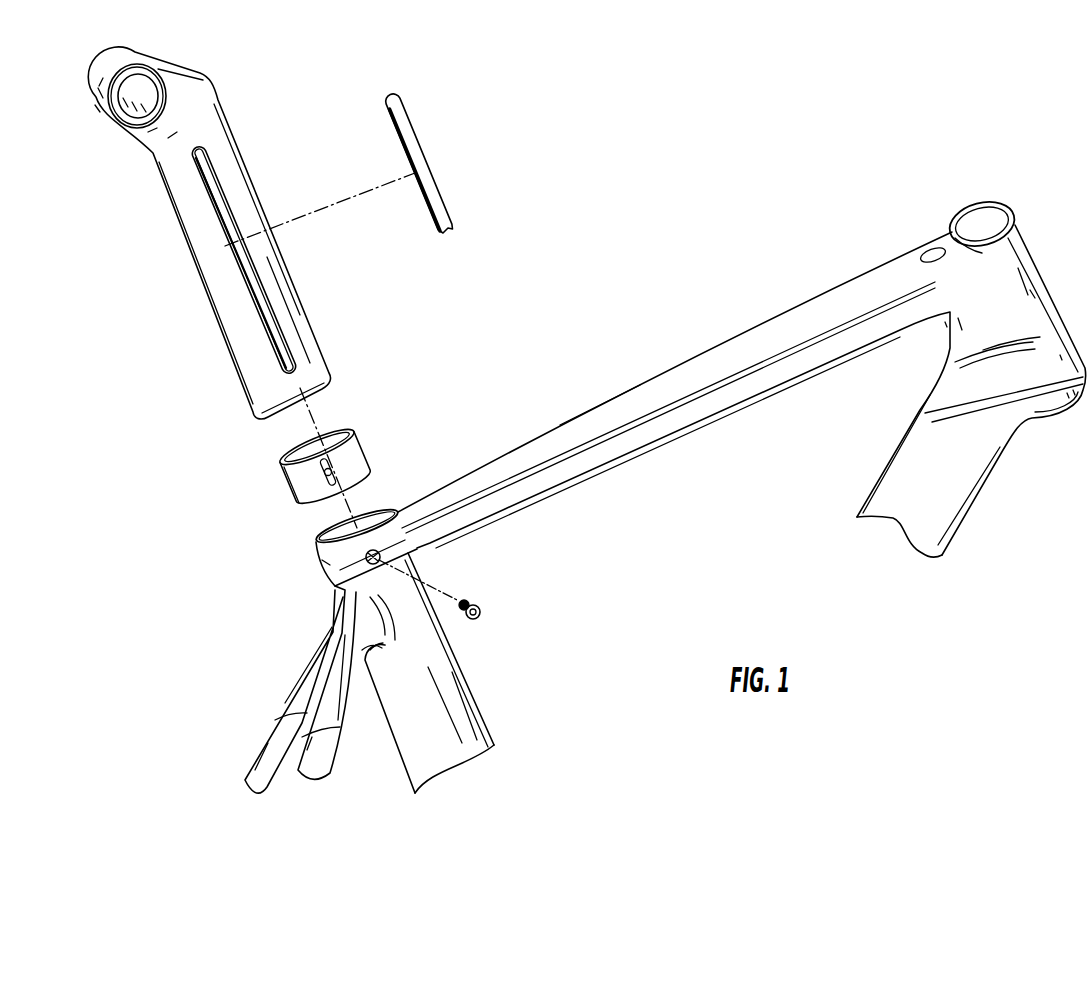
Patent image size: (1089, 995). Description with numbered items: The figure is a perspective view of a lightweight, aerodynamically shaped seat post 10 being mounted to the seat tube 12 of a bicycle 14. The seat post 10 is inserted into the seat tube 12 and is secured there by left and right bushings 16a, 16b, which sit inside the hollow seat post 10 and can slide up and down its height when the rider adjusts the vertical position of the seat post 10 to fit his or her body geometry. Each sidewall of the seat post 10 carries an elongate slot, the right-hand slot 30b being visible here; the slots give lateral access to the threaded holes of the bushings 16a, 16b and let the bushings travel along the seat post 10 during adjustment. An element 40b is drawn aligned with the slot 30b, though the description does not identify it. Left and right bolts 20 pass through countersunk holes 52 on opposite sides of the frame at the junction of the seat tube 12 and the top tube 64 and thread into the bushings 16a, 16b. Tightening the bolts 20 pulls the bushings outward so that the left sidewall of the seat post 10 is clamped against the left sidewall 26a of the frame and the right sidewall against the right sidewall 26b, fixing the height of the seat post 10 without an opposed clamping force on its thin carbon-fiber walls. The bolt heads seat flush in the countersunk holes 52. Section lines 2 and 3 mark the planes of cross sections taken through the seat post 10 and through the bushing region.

The bicycle 14 is at (56, 66).
The seat post 10 is at (233, 135).
The elongate slot 30b is at (223, 217).
The bolt 40b is at (413, 152).
The section line 2- 2 is at (300, 245).
The section line 3- 3 is at (245, 448).
The left bushing 16a is at (300, 421).
The right bushing 16b is at (306, 490).
The left sidewall of the bicycle frame 26a is at (317, 530).
The right sidewall of the bicycle frame 26b is at (340, 590).
The countersunk hole 52 is at (400, 548).
The bolt 20 is at (480, 598).
The seat tube 12 is at (613, 463).
The top tube 64 is at (592, 420).